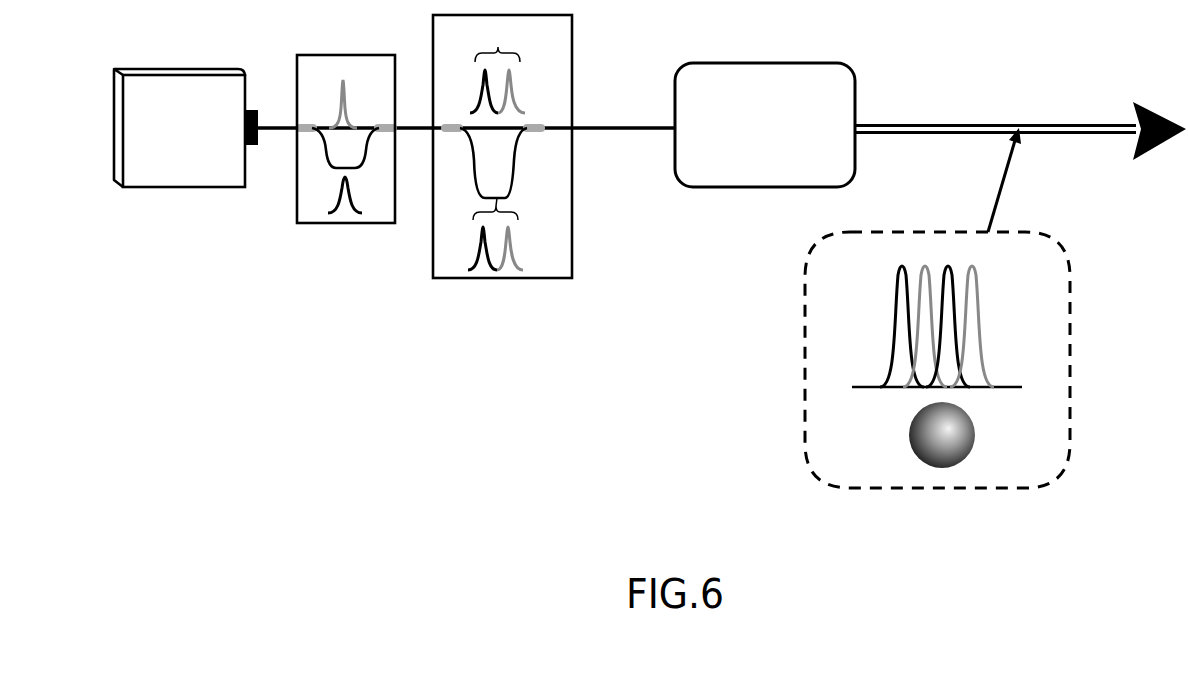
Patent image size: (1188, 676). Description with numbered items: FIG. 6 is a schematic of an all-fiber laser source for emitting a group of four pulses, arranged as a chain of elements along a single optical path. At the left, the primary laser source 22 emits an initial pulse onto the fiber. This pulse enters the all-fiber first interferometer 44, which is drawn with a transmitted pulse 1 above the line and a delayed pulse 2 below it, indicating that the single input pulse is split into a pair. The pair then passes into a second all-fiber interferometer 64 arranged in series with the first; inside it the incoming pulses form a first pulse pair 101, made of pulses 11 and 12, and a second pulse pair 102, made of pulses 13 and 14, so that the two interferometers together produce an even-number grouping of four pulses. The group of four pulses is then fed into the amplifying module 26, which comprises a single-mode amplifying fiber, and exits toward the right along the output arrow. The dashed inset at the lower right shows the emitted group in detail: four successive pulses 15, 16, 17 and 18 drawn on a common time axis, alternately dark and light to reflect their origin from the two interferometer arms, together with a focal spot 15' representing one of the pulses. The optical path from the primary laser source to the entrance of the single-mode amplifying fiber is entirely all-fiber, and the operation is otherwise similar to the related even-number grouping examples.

The primary laser source 22 is at (170, 140).
The all-fiber first interferometer 44 is at (295, 203).
The first pulse / spectral component 1 is at (348, 98).
The second pulse / spectral component 2 is at (354, 186).
The all-fiber second interferometer 64 is at (572, 39).
The first pulse pair 101 is at (497, 41).
The second pulse pair 102 is at (497, 198).
The first sub-pulse 11 is at (480, 72).
The second sub-pulse 12 is at (513, 72).
The third sub-pulse 13 is at (478, 238).
The fourth sub-pulse 14 is at (512, 238).
The amplifying module 26 is at (778, 63).
The first output pulse 15 is at (882, 326).
The second output pulse 16 is at (925, 313).
The third output pulse 17 is at (948, 313).
The fourth output pulse 18 is at (982, 292).
The focal spot of pulse 15' is at (908, 435).